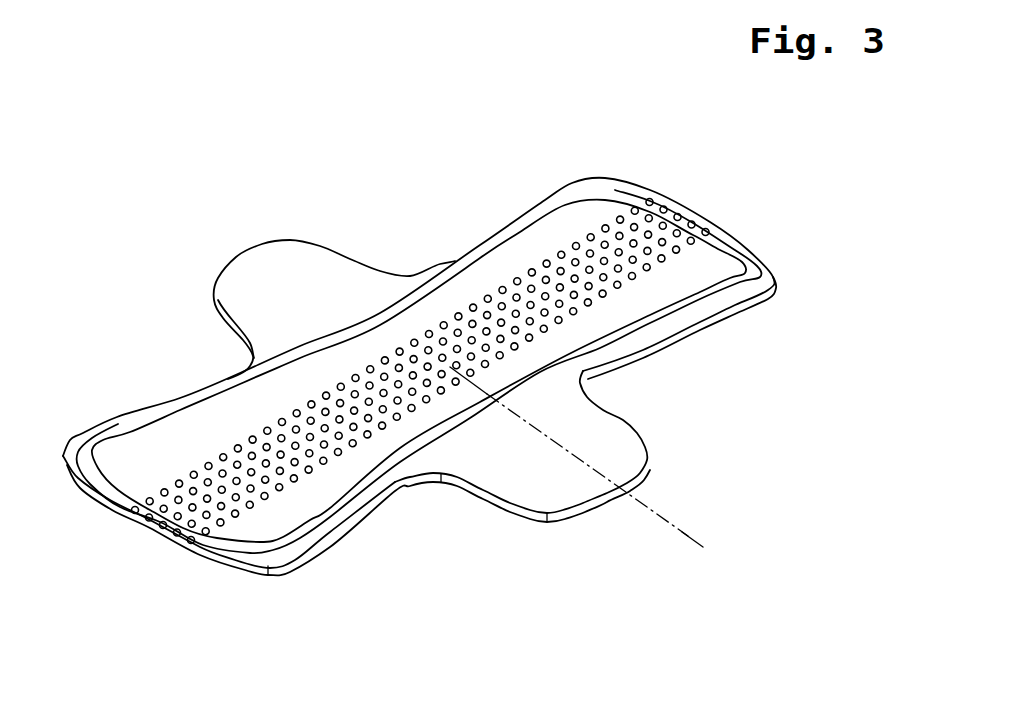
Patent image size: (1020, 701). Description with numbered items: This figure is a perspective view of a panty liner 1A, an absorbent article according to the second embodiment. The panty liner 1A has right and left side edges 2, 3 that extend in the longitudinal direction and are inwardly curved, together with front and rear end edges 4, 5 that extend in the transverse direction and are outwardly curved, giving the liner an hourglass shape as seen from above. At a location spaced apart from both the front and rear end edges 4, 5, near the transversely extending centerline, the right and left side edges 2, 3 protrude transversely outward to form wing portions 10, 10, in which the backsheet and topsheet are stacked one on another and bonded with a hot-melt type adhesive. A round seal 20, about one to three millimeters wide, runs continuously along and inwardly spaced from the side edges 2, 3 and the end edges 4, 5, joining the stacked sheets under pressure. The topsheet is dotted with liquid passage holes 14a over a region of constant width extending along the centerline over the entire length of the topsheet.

The panty liner 1A is at (456, 158).
The right side edge 2 is at (187, 397).
The left side edge 3 is at (380, 509).
The front end edge 4 is at (208, 557).
The rear end edge 5 is at (727, 231).
The wing portion 10 is at (293, 273).
The liquid passage holes 14a is at (620, 220).
The round seal 20 is at (703, 303).